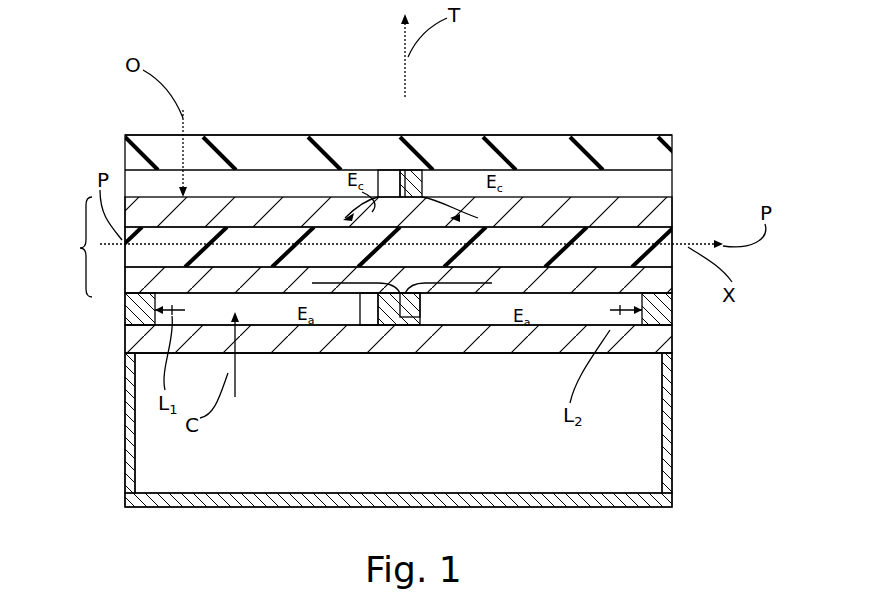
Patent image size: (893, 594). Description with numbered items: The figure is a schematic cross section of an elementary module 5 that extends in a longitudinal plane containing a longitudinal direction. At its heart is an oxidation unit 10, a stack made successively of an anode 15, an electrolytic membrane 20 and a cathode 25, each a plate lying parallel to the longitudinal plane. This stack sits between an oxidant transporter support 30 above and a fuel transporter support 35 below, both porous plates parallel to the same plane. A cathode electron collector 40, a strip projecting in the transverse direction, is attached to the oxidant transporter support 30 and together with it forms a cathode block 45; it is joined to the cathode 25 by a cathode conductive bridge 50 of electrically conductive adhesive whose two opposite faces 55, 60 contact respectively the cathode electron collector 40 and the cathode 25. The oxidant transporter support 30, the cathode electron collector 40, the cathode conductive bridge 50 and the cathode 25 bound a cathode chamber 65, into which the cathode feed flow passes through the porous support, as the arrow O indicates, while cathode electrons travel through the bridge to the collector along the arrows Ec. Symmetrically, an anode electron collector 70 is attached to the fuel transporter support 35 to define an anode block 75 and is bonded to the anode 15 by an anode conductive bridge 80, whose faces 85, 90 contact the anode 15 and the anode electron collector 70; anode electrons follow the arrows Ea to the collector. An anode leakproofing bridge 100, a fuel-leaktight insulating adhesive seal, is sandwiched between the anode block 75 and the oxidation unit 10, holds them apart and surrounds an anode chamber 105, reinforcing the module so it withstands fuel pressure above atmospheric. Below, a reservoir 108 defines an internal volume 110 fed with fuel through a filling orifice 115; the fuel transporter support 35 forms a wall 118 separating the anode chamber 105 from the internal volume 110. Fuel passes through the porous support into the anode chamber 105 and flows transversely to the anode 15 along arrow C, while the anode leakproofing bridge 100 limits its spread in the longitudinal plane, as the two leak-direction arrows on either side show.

The elementary module 5 is at (108, 96).
The oxidation unit 10 is at (80, 248).
The anode 15 is at (647, 270).
The electrolytic membrane 20 is at (668, 240).
The cathode 25 is at (660, 213).
The oxidant transporter support 30 is at (645, 135).
The fuel transporter support 35 is at (123, 345).
The cathode electron collector 40 is at (425, 170).
The cathode block 45 is at (292, 135).
The cathode conductive bridge 50 is at (400, 170).
The face of the cathode conductive bridge 55 is at (381, 170).
The face of the cathode conductive bridge 60 is at (437, 205).
The cathode chamber 65 is at (232, 135).
The anode electron collector 70 is at (410, 327).
The anode block 75 is at (632, 327).
The anode conductive bridge 80 is at (420, 300).
The face of the anode conductive bridge 85 is at (363, 327).
The face of the anode conductive bridge 90 is at (385, 330).
The anode leakproofing bridge 100 is at (673, 323).
The anode chamber 105 is at (273, 313).
The reservoir 108 is at (528, 493).
The internal volume 110 is at (605, 470).
The filling orifice 115 is at (130, 455).
The wall 118 is at (483, 353).